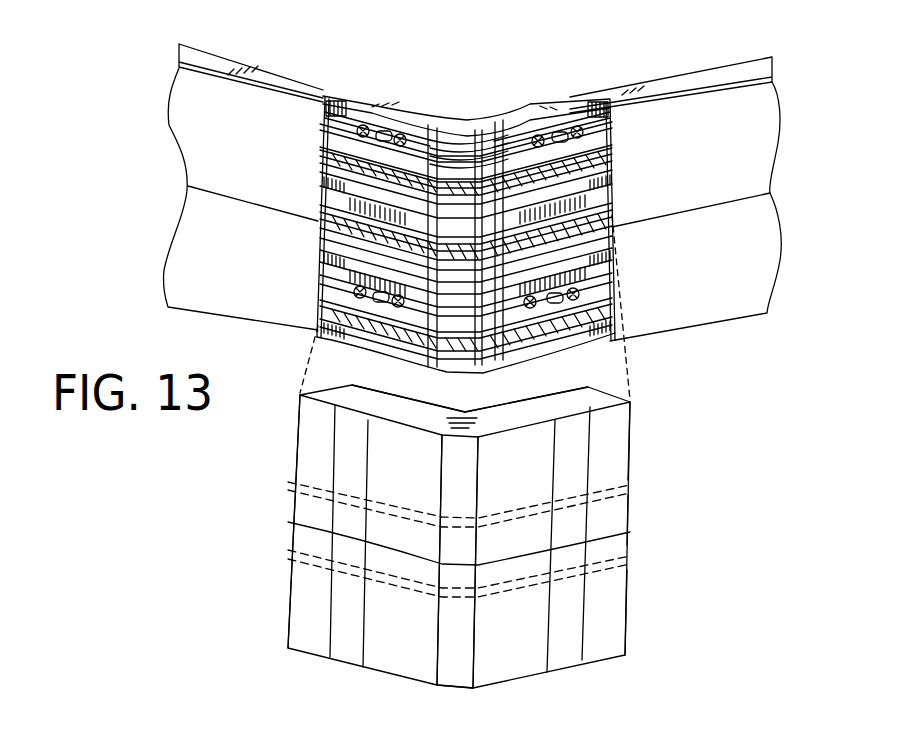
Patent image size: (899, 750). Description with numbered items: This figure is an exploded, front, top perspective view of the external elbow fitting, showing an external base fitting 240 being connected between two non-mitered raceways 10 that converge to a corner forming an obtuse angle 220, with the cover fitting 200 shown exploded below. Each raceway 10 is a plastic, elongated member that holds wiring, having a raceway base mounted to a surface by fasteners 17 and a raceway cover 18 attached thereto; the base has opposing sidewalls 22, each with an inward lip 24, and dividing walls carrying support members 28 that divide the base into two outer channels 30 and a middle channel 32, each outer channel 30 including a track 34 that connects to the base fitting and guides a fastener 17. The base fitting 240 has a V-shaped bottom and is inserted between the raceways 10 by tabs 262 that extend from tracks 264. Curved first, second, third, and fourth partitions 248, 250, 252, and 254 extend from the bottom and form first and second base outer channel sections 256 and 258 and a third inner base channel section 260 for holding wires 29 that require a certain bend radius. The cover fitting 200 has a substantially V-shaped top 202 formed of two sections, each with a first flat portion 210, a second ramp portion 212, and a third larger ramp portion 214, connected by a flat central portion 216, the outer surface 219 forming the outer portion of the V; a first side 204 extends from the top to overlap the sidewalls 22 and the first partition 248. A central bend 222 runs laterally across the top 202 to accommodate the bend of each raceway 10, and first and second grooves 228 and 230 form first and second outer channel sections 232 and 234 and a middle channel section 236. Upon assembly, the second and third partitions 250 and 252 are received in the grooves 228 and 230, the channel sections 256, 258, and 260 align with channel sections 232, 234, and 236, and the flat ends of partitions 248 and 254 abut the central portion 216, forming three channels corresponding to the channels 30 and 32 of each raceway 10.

The raceway 10 is at (163, 81).
The fasteners 17 is at (365, 126).
The raceway cover 18 is at (215, 158).
The sidewalls 22 is at (230, 66).
The inward lip 24 is at (610, 112).
The support members 28 is at (323, 167).
The wires 29 is at (323, 128).
The outer channels 30 is at (322, 125).
The middle channel 32 is at (332, 232).
The track 34 is at (323, 285).
The cover fitting 200 is at (268, 599).
The top 202 is at (292, 447).
The first side 204 is at (588, 402).
The first flat portion 210 is at (610, 633).
The second ramp portion 212 is at (340, 638).
The third larger ramp portion 214 is at (518, 647).
The flat central portion 216 is at (460, 652).
The outer surface 219 is at (395, 647).
The obtuse angle 220 is at (490, 108).
The central bend 222 is at (292, 520).
The first groove 228 is at (643, 486).
The second groove 230 is at (645, 556).
The first outer channel section 232 is at (643, 452).
The second outer channel section 234 is at (643, 601).
The middle channel section 236 is at (643, 531).
The external base fitting 240 is at (462, 100).
The first partition 248 is at (420, 110).
The second partition 250 is at (350, 197).
The third partition 252 is at (588, 262).
The fourth partition 254 is at (395, 348).
The first base outer channel section 256 is at (593, 161).
The second base outer channel section 258 is at (596, 327).
The third inner base channel section 260 is at (597, 233).
The tabs 262 is at (546, 128).
The tracks 264 is at (345, 102).